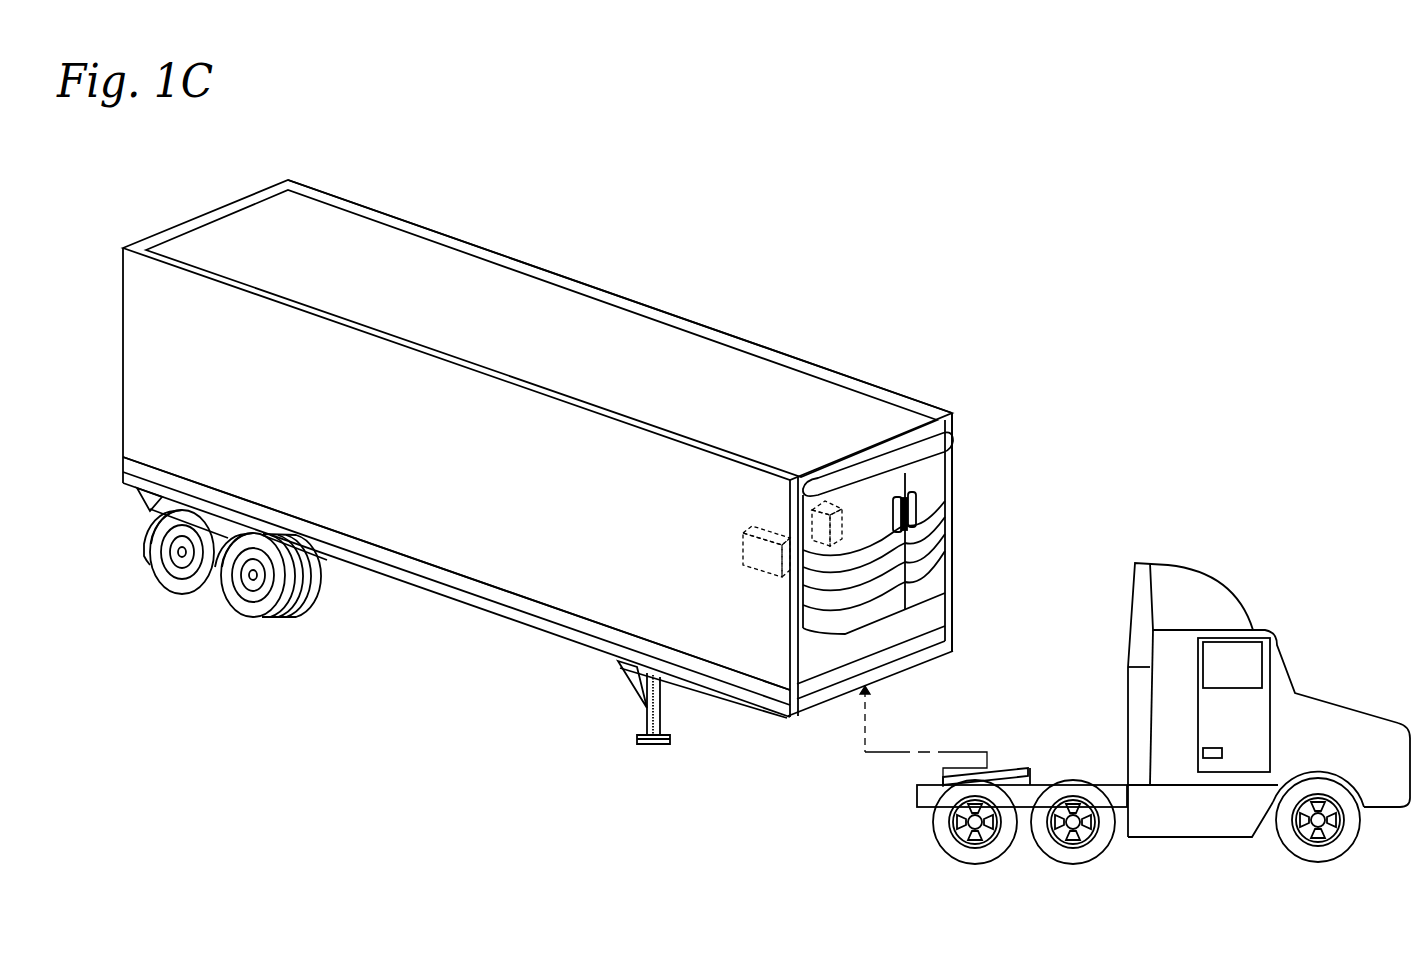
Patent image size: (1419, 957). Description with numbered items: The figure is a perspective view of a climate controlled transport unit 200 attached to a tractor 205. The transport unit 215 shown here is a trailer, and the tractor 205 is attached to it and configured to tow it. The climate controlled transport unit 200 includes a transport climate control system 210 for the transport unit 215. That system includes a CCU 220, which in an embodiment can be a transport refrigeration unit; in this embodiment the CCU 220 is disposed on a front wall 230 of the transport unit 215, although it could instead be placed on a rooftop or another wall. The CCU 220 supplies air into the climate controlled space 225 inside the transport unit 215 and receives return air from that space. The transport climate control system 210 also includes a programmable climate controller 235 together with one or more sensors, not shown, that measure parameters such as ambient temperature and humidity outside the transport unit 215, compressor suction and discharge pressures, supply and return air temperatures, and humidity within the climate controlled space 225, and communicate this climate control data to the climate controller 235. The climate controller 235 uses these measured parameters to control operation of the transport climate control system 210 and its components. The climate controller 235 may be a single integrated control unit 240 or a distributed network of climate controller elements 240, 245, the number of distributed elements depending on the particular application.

The climate controlled transport unit 200 is at (567, 240).
The tractor 205 is at (1328, 703).
The transport climate control system 210 is at (1022, 280).
The transport unit 215 is at (683, 317).
The CCU 220 is at (938, 478).
The climate controlled space 225 is at (543, 537).
The front wall 230 is at (945, 426).
The climate controller 235 is at (745, 637).
The integrated control unit 240 is at (836, 548).
The climate controller element 245 is at (743, 550).